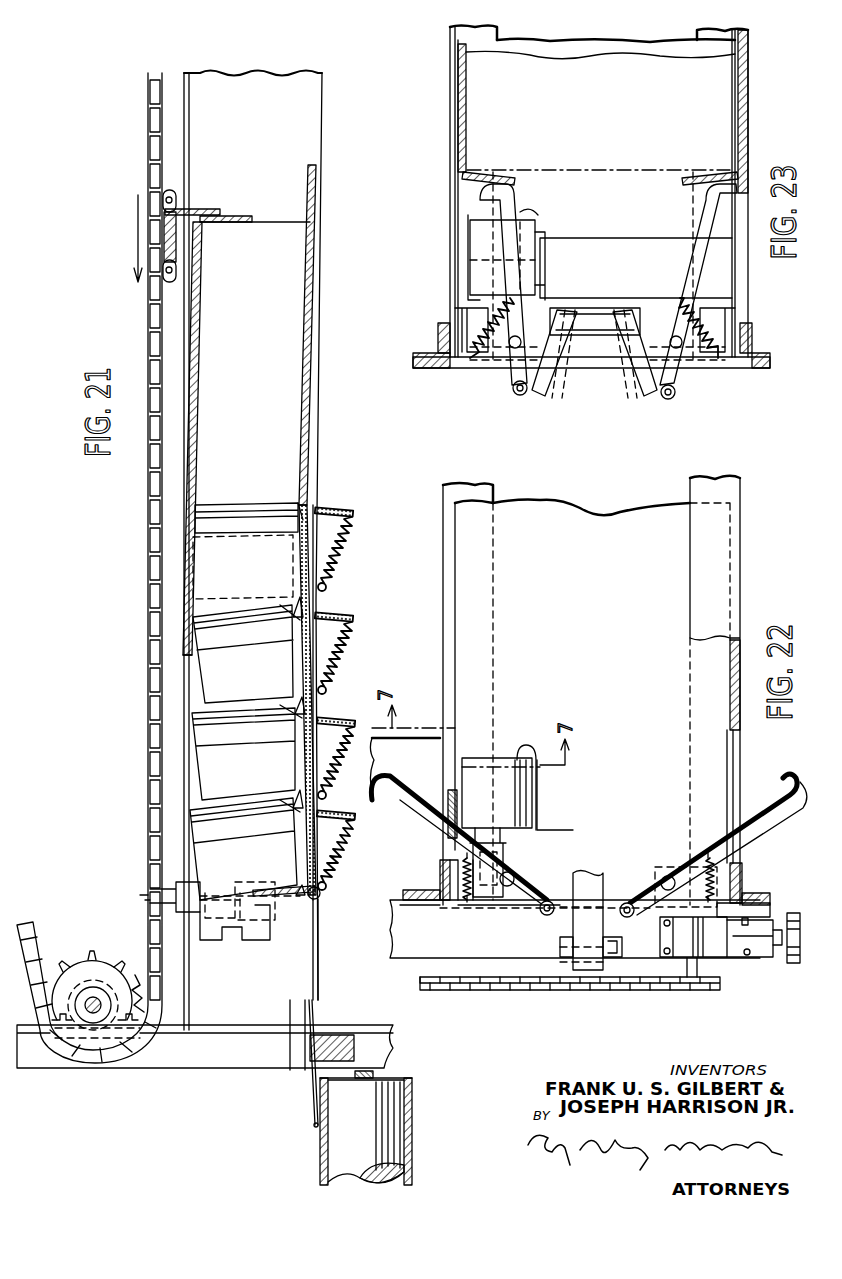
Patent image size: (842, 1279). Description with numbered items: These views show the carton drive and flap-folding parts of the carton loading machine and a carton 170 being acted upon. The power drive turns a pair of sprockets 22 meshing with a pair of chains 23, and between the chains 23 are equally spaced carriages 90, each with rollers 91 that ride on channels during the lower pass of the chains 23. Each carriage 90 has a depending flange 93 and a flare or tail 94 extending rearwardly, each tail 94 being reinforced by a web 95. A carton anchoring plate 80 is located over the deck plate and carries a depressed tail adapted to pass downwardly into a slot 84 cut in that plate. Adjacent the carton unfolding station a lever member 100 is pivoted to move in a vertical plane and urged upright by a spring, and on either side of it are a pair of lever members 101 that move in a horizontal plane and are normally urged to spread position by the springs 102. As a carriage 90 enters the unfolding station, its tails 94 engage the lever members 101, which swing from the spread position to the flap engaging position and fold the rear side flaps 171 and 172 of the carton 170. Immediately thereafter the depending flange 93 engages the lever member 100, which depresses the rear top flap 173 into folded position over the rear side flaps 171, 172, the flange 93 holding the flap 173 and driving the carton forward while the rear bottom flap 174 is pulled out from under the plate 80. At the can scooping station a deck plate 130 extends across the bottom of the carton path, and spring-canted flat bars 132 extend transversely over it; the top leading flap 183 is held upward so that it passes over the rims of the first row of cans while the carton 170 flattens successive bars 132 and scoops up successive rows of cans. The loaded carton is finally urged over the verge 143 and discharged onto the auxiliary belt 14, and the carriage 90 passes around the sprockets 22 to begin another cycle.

In FIG. 21, the auxiliary belt 14 is at (320, 1152).
In FIG. 21, the sprocket 22 is at (87, 970).
In FIG. 21, the chain 23 is at (30, 928).
In FIG. 23, the carton anchoring plate 80 is at (508, 220).
In FIG. 22, the carton anchoring plate 80 is at (505, 760).
In FIG. 23, the slot 84 is at (545, 286).
In FIG. 22, the slot 84 is at (540, 824).
In FIG. 21, the carriage 90 is at (203, 206).
In FIG. 23, the carriage 90 is at (602, 357).
In FIG. 21, the roller 91 is at (170, 192).
In FIG. 21, the depending flange 93 is at (220, 212).
In FIG. 23, the flare or tail 94 is at (548, 392).
In FIG. 23, the web 95 is at (578, 340).
In FIG. 22, the lever member 100 is at (600, 890).
In FIG. 23, the lever member 101 is at (507, 276).
In FIG. 22, the lever member 101 is at (538, 884).
In FIG. 23, the spring 102 is at (705, 312).
In FIG. 22, the spring 102 is at (470, 902).
In FIG. 21, the deck plate 130 is at (338, 866).
In FIG. 21, the flat bar 132 is at (338, 748).
In FIG. 21, the verge 143 is at (313, 1127).
In FIG. 23, the carton 170 is at (632, 63).
In FIG. 23, the rear side flap 171 is at (488, 172).
In FIG. 21, the rear side flap 172 is at (272, 222).
In FIG. 23, the rear side flap 172 is at (708, 172).
In FIG. 21, the rear top flap 173 is at (250, 217).
In FIG. 21, the rear bottom flap 174 is at (308, 190).
In FIG. 23, the rear bottom flap 174 is at (610, 230).
In FIG. 21, the top leading flap 183 is at (184, 622).